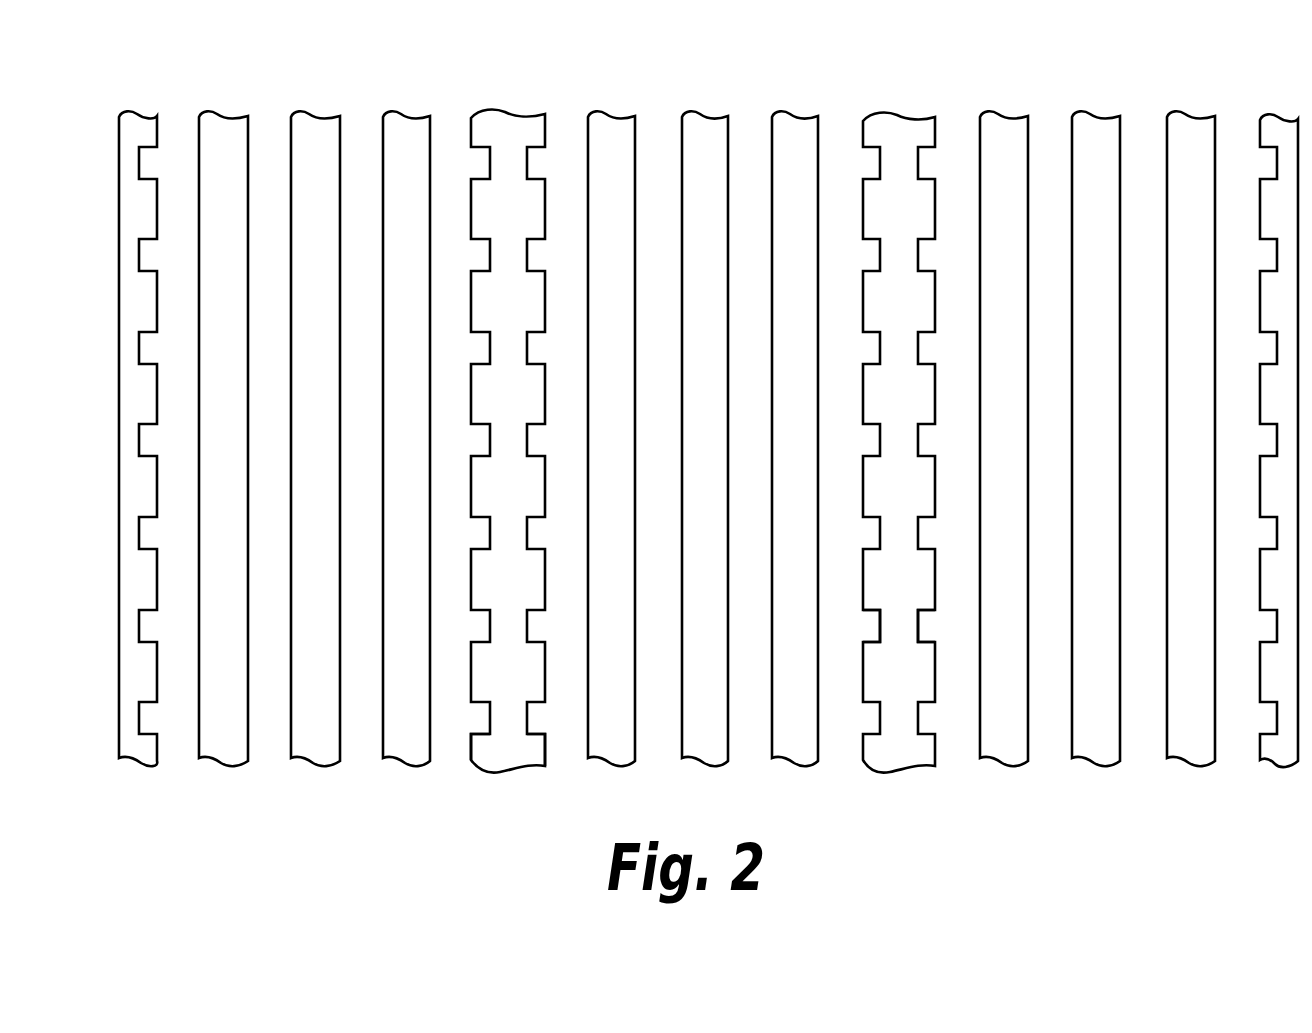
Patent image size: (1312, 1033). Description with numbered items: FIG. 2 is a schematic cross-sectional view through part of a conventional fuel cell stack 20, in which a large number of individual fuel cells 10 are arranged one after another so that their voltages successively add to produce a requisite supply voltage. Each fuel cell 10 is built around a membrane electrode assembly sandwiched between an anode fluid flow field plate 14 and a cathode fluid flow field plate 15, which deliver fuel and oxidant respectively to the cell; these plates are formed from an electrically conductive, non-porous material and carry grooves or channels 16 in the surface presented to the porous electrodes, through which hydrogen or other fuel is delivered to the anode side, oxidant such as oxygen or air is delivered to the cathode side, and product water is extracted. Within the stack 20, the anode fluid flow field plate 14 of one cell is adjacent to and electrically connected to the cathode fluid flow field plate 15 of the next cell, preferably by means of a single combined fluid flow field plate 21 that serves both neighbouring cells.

The fuel cell 10 is at (135, 105).
The anode fluid flow field plate 14 is at (532, 747).
The cathode fluid flow field plate 15 is at (470, 752).
The channels 16 is at (870, 628).
The stack 20 is at (634, 63).
The combined fluid flow field plate 21 is at (503, 769).